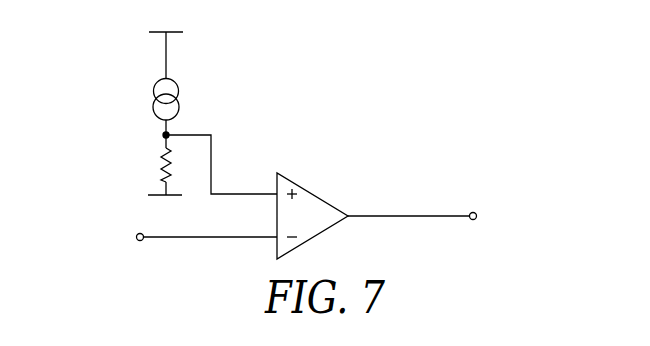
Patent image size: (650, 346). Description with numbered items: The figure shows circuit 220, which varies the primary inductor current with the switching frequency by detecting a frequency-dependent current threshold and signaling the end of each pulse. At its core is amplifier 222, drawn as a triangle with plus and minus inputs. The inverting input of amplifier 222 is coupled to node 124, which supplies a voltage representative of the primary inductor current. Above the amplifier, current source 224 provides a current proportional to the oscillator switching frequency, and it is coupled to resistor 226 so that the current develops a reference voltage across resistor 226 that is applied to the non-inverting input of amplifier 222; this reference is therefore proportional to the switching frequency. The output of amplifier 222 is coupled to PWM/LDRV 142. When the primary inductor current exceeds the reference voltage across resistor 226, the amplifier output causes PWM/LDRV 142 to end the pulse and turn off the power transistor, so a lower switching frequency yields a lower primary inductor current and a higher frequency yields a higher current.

The circuit 220 is at (371, 63).
The amplifier 222 is at (313, 237).
The current source 224 is at (170, 98).
The resistor 226 is at (162, 167).
The node 124 is at (155, 237).
The PWM/LDRV 142 is at (479, 216).